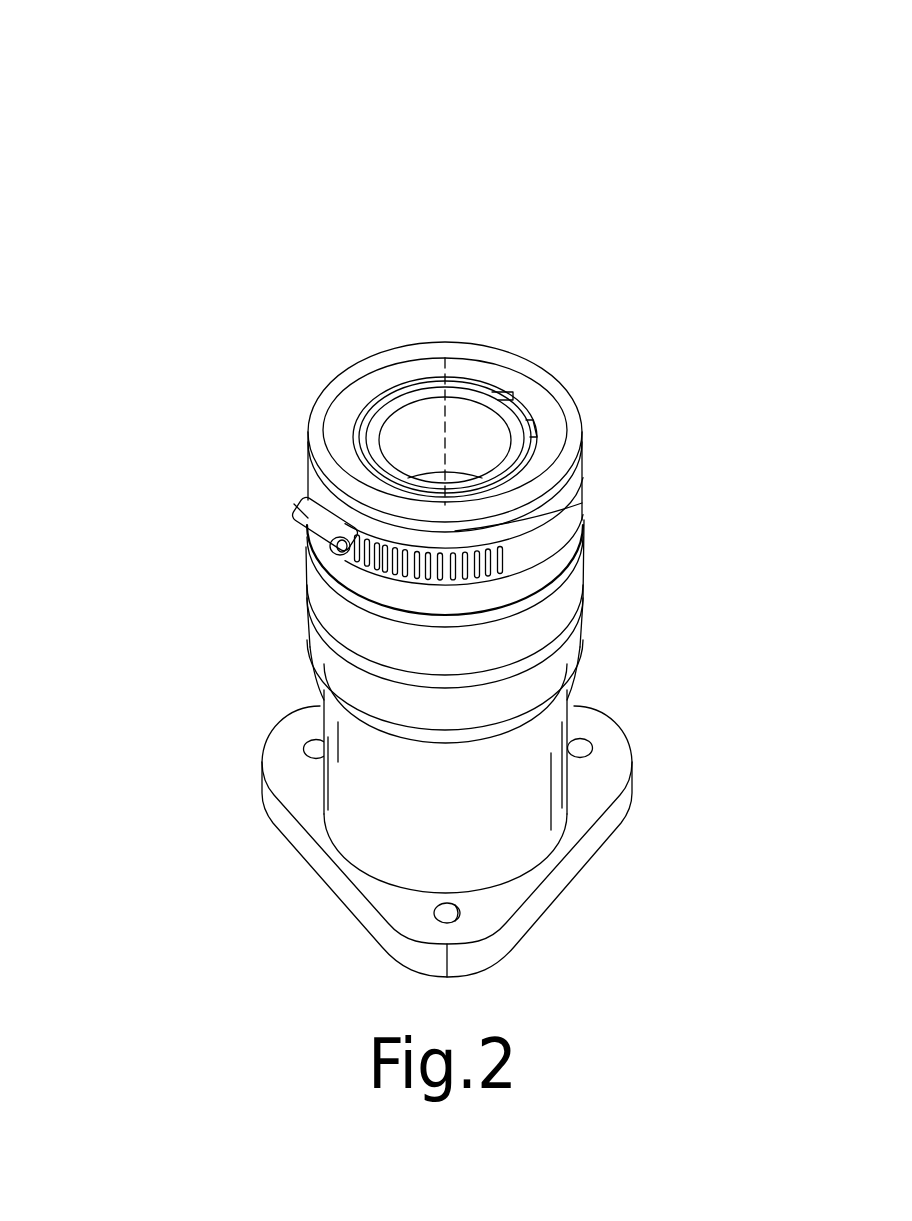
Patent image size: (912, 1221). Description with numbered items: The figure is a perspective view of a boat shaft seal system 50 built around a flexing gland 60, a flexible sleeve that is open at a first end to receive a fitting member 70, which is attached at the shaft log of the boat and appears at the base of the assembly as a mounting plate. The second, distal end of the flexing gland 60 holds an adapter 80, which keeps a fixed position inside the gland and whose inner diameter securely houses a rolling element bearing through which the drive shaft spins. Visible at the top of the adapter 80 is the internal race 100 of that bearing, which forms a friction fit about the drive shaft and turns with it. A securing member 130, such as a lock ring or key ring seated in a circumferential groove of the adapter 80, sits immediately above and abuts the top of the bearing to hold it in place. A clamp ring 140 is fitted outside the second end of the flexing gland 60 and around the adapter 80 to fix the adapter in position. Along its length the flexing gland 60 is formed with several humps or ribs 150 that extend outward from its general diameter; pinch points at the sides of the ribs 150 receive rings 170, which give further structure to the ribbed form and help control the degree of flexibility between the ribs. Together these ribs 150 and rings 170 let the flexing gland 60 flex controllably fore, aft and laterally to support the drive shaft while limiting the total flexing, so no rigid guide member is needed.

The boat shaft seal system 50 is at (108, 130).
The flexing gland 60 is at (527, 760).
The fitting member 70 is at (605, 765).
The adapter 80 is at (340, 432).
The internal race 100 is at (415, 425).
The securing member 130 is at (492, 394).
The clamp ring 140 is at (292, 502).
The ribs 150 is at (577, 572).
The rings 170 is at (330, 692).